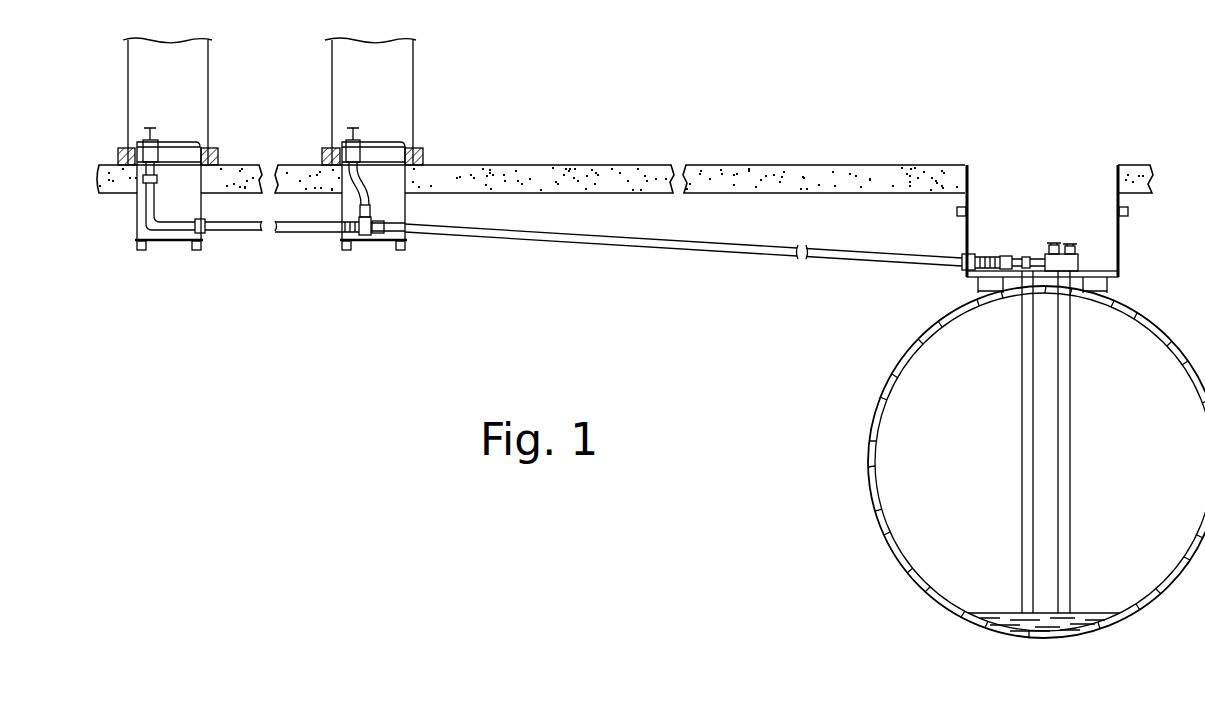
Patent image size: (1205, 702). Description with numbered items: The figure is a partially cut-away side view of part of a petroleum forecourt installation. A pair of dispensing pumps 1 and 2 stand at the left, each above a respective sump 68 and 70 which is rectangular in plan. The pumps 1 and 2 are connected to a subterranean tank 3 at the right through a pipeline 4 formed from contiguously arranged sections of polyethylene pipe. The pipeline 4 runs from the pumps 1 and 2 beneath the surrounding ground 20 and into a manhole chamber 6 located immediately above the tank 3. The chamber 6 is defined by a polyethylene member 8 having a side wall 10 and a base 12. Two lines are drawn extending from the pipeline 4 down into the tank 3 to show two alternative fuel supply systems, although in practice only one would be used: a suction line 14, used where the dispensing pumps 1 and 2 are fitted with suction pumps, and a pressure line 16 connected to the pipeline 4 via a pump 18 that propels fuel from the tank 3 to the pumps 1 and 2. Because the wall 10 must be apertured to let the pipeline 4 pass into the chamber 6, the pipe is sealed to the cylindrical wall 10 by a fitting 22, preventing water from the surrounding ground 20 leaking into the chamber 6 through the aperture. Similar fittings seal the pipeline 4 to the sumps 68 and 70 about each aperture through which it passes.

The dispensing pump 1 is at (183, 80).
The dispensing pump 2 is at (380, 78).
The subterranean tank 3 is at (868, 442).
The pipeline 4 is at (542, 233).
The manhole chamber 6 is at (1042, 207).
The polyethylene member 8 is at (964, 232).
The side wall 10 is at (1120, 237).
The base 12 is at (1117, 285).
The suction line 14 is at (1022, 430).
The pressure line 16 is at (1070, 426).
The pump 18 is at (1070, 240).
The surrounding ground 20 is at (882, 230).
The fitting 22 is at (957, 273).
The sump 68 is at (136, 241).
The sump 70 is at (341, 241).